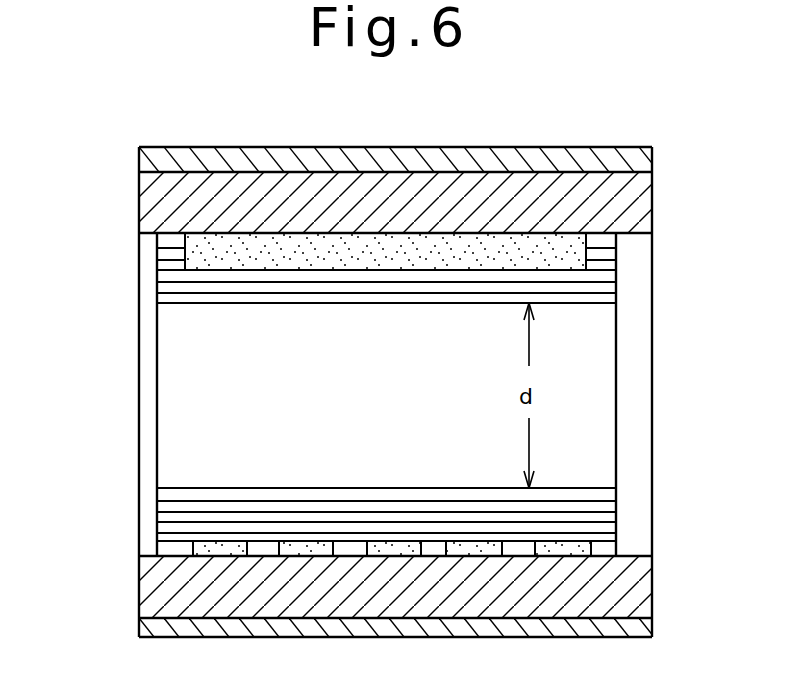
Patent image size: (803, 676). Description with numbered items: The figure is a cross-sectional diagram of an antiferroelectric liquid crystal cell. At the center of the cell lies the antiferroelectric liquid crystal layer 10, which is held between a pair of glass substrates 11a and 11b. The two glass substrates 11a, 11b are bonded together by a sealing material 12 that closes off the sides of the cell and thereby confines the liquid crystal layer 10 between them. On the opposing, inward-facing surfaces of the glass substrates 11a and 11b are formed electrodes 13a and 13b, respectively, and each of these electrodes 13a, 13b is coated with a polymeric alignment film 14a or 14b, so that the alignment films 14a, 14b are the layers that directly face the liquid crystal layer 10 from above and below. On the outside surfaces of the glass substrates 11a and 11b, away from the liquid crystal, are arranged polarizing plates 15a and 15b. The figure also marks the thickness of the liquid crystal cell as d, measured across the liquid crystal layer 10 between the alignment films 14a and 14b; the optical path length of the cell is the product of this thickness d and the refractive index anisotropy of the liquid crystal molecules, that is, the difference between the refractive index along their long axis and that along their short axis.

The antiferroelectric liquid crystal layer 10 is at (377, 399).
The glass substrate 11a is at (643, 208).
The glass substrate 11b is at (150, 578).
The sealing material 12 is at (147, 356).
The electrode 13a is at (190, 268).
The electrode 13b is at (194, 552).
The polymeric alignment film 14a is at (596, 283).
The polymeric alignment film 14b is at (608, 515).
The polarizing plate 15a is at (390, 158).
The polarizing plate 15b is at (643, 627).